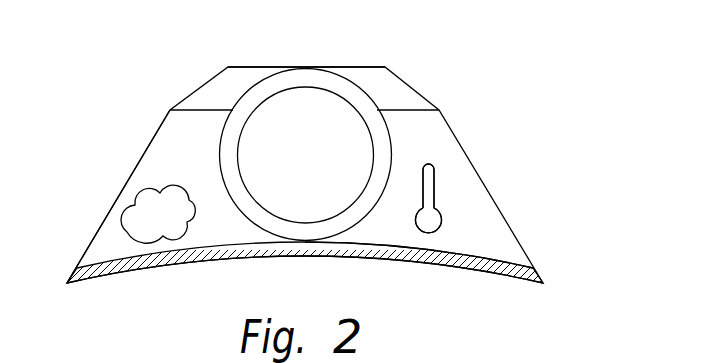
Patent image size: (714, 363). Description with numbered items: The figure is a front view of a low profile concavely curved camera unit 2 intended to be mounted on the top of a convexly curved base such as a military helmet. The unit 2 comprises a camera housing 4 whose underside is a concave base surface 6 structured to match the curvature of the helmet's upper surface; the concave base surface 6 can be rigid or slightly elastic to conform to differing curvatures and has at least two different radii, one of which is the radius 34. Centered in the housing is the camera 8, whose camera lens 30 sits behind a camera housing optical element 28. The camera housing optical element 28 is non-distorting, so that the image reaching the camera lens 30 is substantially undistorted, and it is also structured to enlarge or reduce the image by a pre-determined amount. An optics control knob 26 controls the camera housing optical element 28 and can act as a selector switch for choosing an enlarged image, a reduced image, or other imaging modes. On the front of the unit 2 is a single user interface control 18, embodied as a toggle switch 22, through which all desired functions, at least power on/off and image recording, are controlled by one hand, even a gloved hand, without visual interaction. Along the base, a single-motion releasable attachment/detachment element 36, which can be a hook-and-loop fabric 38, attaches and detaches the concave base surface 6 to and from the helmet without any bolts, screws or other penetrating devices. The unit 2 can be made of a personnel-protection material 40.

The low profile concavely curved camera unit 2 is at (452, 75).
The camera housing 4 is at (128, 177).
The concave base surface 6 is at (402, 260).
The camera 8 is at (297, 69).
The user interface control 18 is at (435, 155).
The toggle switch 22 is at (435, 192).
The optics control knob 26 is at (118, 236).
The camera housing optical element 28 is at (245, 90).
The camera lens 30 is at (347, 97).
The radius 34 is at (238, 260).
The attachment/detachment element 36 is at (497, 259).
The hook-and-loop fabric 38 is at (460, 266).
The personnel-protection material 40 is at (173, 133).